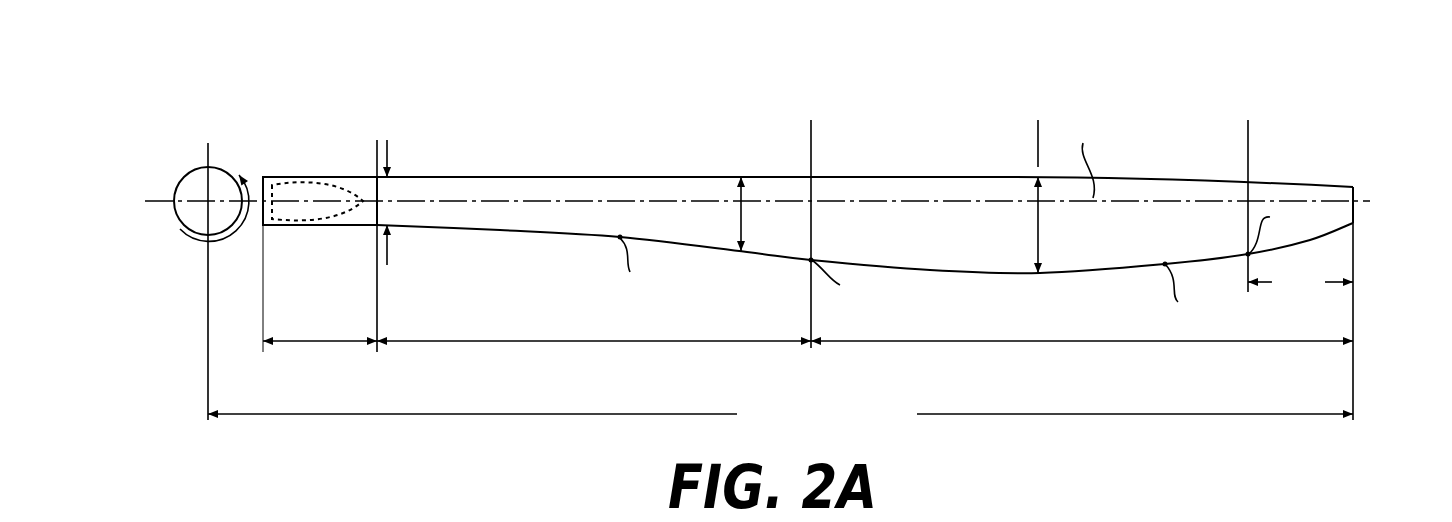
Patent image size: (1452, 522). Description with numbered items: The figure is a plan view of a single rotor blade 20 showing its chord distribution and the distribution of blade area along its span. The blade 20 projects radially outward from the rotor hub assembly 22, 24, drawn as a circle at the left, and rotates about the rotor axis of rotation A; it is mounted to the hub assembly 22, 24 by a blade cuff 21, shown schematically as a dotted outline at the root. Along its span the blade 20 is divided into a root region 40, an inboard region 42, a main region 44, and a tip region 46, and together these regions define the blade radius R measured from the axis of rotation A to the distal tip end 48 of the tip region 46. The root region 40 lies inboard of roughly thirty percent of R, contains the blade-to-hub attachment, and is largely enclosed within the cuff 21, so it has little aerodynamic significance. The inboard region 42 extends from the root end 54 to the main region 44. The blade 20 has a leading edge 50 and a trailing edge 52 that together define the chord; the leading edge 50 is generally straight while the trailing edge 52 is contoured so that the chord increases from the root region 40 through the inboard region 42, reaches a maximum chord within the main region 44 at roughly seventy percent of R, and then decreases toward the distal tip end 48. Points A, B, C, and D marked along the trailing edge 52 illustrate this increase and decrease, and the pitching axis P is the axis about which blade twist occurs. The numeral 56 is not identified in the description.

The rotor blade 20 is at (850, 71).
The blade cuff 21 is at (339, 182).
The rotor hub assembly 22 is at (170, 188).
The rotor hub assembly 24 is at (205, 263).
The rotor axis of rotation A is at (206, 202).
The root region 40 is at (320, 271).
The inboard region 42 is at (594, 343).
The main region 44 is at (1082, 343).
The tip region 46 is at (1316, 295).
The distal tip end 48 is at (1356, 215).
The leading edge 50 is at (622, 177).
The trailing edge 52 is at (687, 248).
The root end 54 is at (366, 219).
The root region inboard end 56 is at (262, 227).